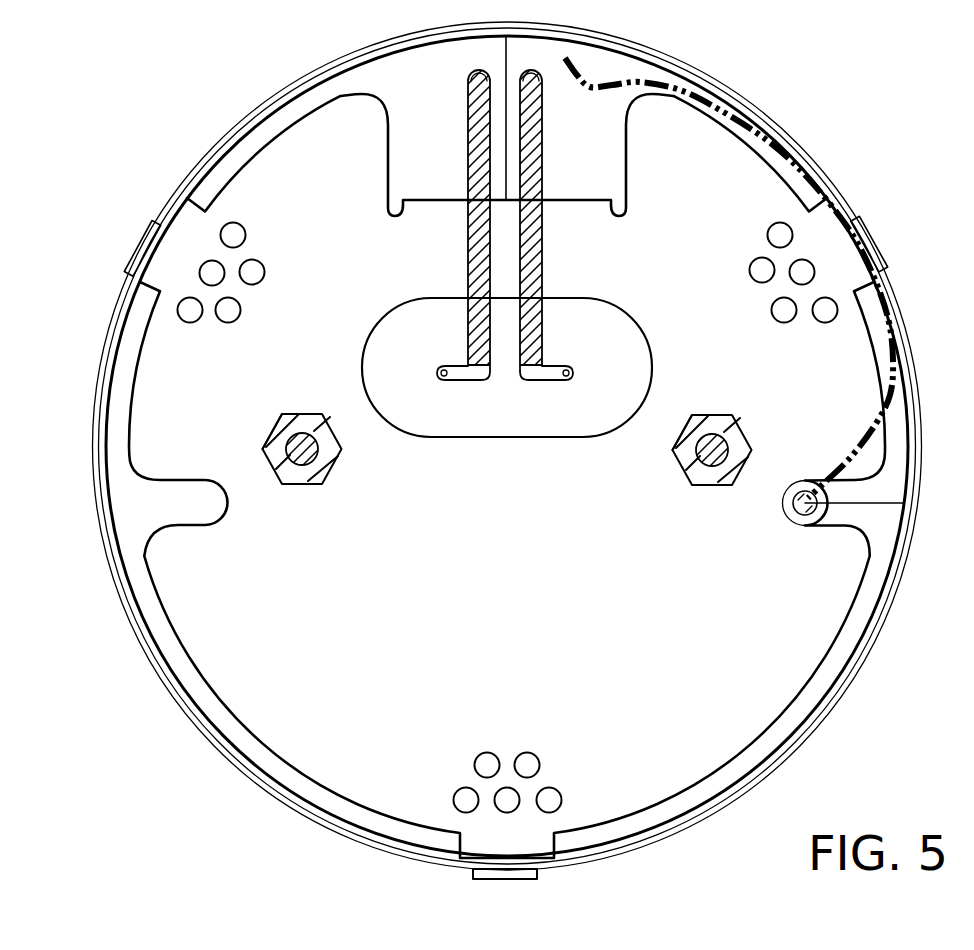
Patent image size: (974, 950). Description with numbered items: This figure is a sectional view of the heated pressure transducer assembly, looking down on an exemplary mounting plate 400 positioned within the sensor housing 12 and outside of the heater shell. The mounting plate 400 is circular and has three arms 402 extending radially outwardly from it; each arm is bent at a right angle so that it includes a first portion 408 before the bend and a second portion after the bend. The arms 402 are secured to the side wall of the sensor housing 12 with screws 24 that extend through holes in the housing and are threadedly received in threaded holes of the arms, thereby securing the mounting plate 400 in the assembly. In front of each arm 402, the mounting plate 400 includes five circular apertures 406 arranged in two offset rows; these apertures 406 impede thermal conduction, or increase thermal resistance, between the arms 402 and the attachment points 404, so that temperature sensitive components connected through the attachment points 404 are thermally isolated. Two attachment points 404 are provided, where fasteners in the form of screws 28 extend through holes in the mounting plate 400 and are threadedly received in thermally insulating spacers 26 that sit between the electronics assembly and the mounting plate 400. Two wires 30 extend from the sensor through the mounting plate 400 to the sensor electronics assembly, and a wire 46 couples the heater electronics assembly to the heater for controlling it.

The sensor housing 12 is at (182, 715).
The screws 24 is at (142, 250).
The thermally insulating spacers 26 is at (323, 468).
The fasteners 28 is at (300, 470).
The wire 30 is at (462, 316).
The wire 46 is at (888, 325).
The mounting plate 400 is at (326, 750).
The arms 402 is at (178, 228).
The attachment point 404 is at (303, 430).
The apertures 406 is at (246, 226).
The first portion 408 is at (145, 272).